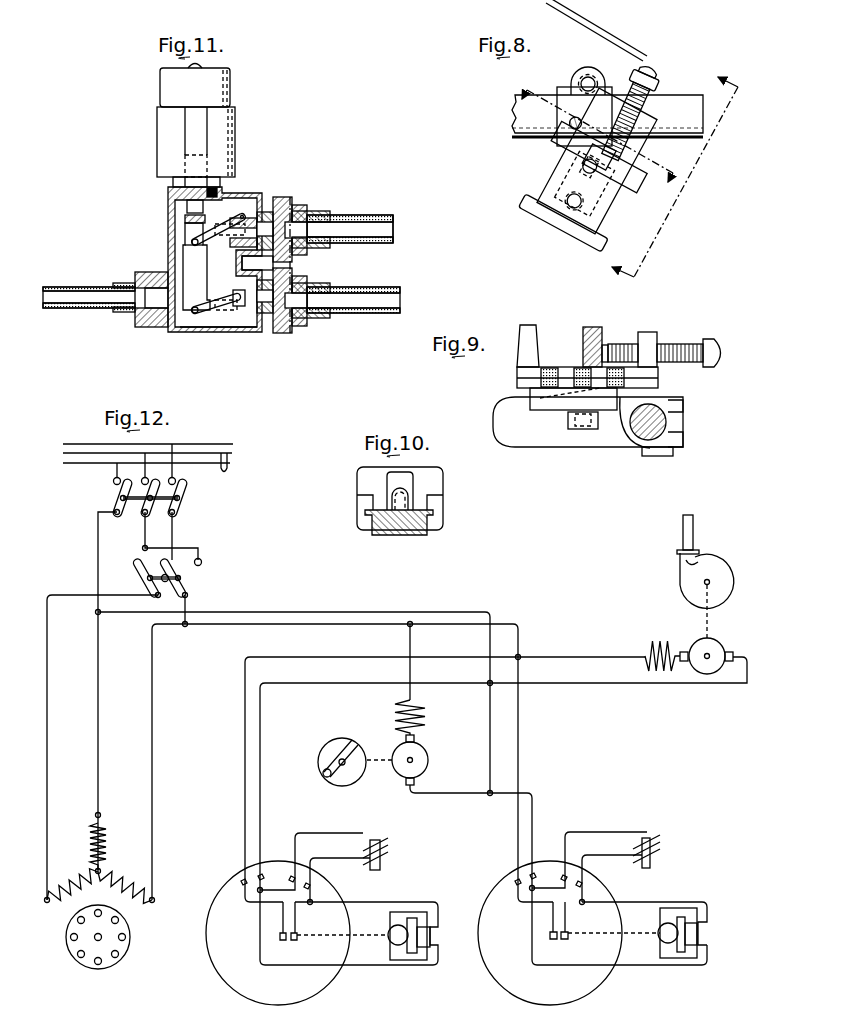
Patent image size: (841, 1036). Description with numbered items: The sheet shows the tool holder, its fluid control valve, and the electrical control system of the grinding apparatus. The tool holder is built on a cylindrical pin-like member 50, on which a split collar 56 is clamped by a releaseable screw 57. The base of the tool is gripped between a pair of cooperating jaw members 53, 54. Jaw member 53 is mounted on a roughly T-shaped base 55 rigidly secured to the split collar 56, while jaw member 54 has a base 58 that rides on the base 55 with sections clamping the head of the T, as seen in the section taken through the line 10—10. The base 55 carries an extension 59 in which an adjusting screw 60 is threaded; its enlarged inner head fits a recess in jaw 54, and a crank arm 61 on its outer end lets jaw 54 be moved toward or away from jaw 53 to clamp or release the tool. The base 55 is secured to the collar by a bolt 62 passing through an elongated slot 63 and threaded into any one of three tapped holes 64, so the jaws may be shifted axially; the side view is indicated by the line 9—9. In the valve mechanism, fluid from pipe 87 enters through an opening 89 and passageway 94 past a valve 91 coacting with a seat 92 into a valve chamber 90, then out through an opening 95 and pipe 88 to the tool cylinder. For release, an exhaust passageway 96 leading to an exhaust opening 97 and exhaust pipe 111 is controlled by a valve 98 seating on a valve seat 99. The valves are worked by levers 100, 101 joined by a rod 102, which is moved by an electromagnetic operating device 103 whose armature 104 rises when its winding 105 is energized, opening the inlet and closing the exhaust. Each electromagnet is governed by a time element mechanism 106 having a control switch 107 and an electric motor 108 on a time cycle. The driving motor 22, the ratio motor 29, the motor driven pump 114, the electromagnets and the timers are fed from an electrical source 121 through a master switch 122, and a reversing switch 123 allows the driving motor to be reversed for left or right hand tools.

In FIG. 8, the section line 9— 9 is at (680, 185).
In FIG. 8, the section line 10— 10 is at (607, 124).
In FIG. 12, the driving motor 22 is at (140, 930).
In FIG. 12, the ratio motor 29 is at (429, 748).
In FIG. 8, the cylindrical pin-like member 50 is at (512, 116).
In FIG. 9, the cylindrical pin-like member 50 is at (552, 447).
In FIG. 8, the jaw member 53 is at (544, 224).
In FIG. 9, the jaw member 53 is at (526, 325).
In FIG. 8, the jaw member 54 is at (560, 152).
In FIG. 9, the jaw member 54 is at (593, 326).
In FIG. 10, the jaw member 54 is at (444, 471).
In FIG. 8, the base 55 is at (574, 150).
In FIG. 9, the base 55 is at (517, 375).
In FIG. 10, the base 55 is at (381, 536).
In FIG. 8, the split collar 56 is at (576, 74).
In FIG. 9, the split collar 56 is at (670, 400).
In FIG. 8, the releaseable screw 57 is at (589, 76).
In FIG. 9, the releaseable screw 57 is at (660, 456).
In FIG. 8, the base 58 is at (629, 175).
In FIG. 9, the base 58 is at (640, 345).
In FIG. 10, the base 58 is at (435, 518).
In FIG. 8, the extension 59 is at (646, 130).
In FIG. 9, the extension 59 is at (666, 340).
In FIG. 8, the adjusting screw 60 is at (664, 85).
In FIG. 9, the adjusting screw 60 is at (710, 339).
In FIG. 8, the crank arm 61 is at (606, 35).
In FIG. 9, the crank arm 61 is at (725, 365).
In FIG. 8, the bolt 62 is at (562, 166).
In FIG. 9, the bolt 62 is at (584, 429).
In FIG. 8, the elongated slot 63 is at (611, 198).
In FIG. 9, the elongated slot 63 is at (540, 400).
In FIG. 8, the tapped holes 64 is at (545, 180).
In FIG. 9, the tapped holes 64 is at (568, 372).
In FIG. 11, the pipe 87 is at (368, 244).
In FIG. 11, the pipe 88 is at (91, 286).
In FIG. 11, the opening 89 is at (312, 212).
In FIG. 11, the valve chamber 90 is at (188, 318).
In FIG. 11, the valve 91 is at (252, 207).
In FIG. 11, the seat 92 is at (287, 193).
In FIG. 11, the passageway 94 is at (308, 200).
In FIG. 11, the opening 95 is at (133, 315).
In FIG. 11, the exhaust passageway 96 is at (276, 333).
In FIG. 11, the exhaust opening 97 is at (300, 318).
In FIG. 11, the valve 98 is at (243, 283).
In FIG. 11, the valve seat 99 is at (297, 280).
In FIG. 11, the lever 100 is at (222, 213).
In FIG. 11, the lever 101 is at (217, 314).
In FIG. 11, the rod 102 is at (193, 261).
In FIG. 11, the electromagnetic operating device 103 is at (233, 100).
In FIG. 12, the electromagnetic operating device 103 is at (390, 847).
In FIG. 11, the armature 104 is at (209, 165).
In FIG. 12, the armature 104 is at (382, 865).
In FIG. 11, the winding 105 is at (237, 131).
In FIG. 12, the winding 105 is at (385, 835).
In FIG. 12, the time element mechanism 106 is at (340, 977).
In FIG. 12, the control switch 107 is at (300, 922).
In FIG. 12, the electric motor 108 is at (410, 960).
In FIG. 11, the exhaust pipe 111 is at (368, 314).
In FIG. 12, the motor driven pump 114 is at (713, 605).
In FIG. 12, the electrical source 121 is at (225, 471).
In FIG. 12, the master switch 122 is at (181, 508).
In FIG. 12, the reversing switch 123 is at (190, 583).